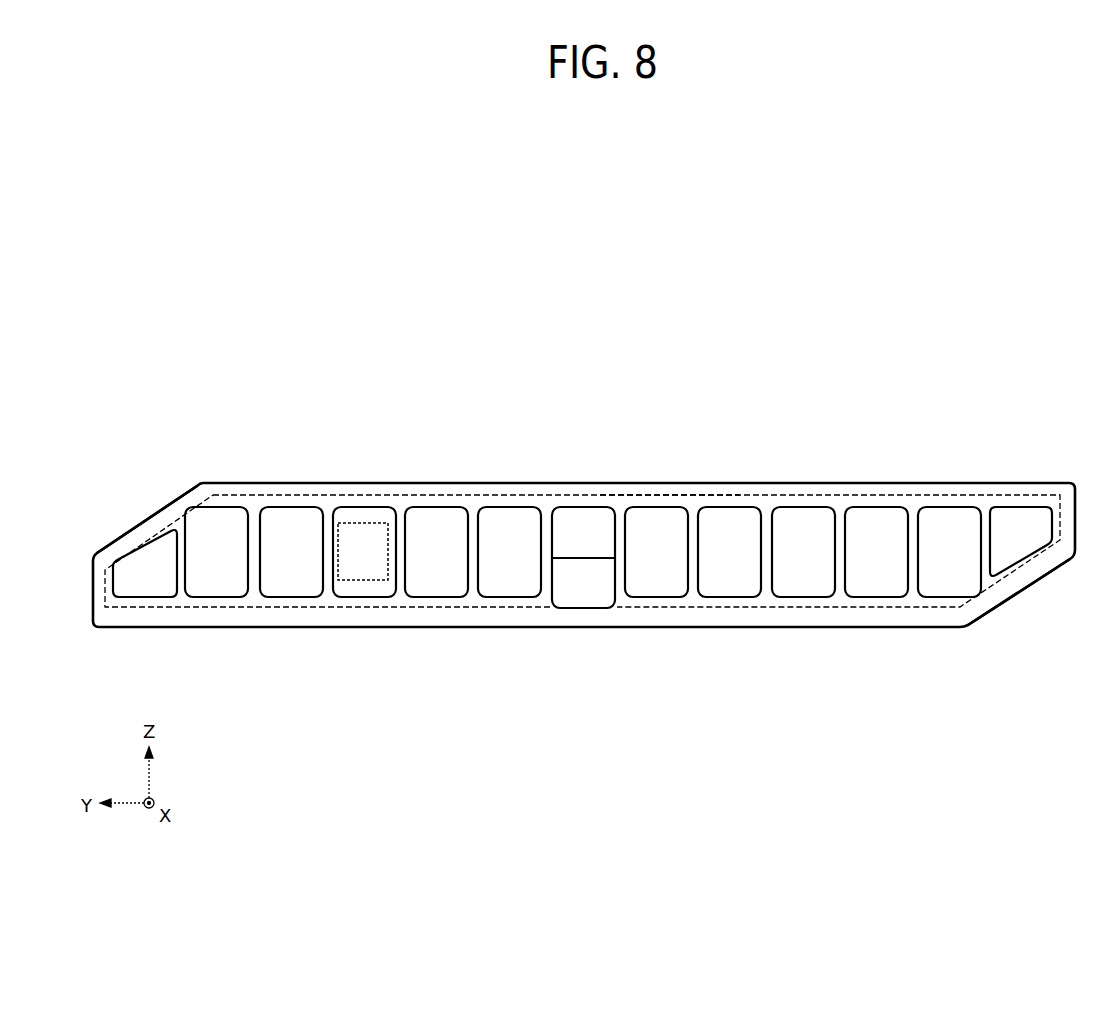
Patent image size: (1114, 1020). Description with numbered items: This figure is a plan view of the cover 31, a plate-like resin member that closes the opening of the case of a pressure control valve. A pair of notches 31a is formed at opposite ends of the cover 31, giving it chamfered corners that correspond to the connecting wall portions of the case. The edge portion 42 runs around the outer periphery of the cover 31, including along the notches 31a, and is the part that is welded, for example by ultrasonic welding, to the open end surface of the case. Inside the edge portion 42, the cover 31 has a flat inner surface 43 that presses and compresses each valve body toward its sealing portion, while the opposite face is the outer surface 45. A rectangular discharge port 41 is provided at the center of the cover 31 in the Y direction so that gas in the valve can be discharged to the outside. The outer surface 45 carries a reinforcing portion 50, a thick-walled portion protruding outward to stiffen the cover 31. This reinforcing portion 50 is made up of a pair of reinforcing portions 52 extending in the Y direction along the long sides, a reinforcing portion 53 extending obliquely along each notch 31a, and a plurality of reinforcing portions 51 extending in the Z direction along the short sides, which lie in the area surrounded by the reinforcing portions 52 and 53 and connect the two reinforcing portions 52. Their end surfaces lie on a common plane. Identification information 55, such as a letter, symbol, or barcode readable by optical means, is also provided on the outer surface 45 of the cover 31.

The cover 31 is at (937, 457).
The notch 31a is at (142, 525).
The discharge port 41 is at (613, 587).
The edge portion 42 is at (667, 492).
The inner surface 43 is at (512, 548).
The outer surface 45 is at (435, 567).
The reinforcing portion 50 is at (582, 553).
The reinforcing portion 51 is at (323, 548).
The reinforcing portion 52 is at (800, 505).
The reinforcing portion 53 is at (178, 528).
The identification information 55 is at (368, 538).